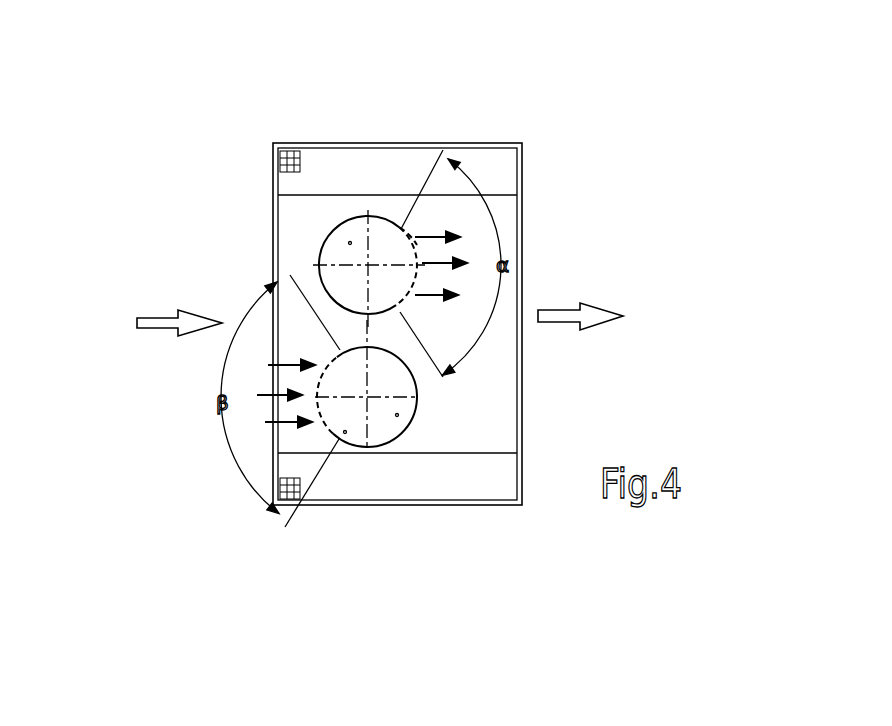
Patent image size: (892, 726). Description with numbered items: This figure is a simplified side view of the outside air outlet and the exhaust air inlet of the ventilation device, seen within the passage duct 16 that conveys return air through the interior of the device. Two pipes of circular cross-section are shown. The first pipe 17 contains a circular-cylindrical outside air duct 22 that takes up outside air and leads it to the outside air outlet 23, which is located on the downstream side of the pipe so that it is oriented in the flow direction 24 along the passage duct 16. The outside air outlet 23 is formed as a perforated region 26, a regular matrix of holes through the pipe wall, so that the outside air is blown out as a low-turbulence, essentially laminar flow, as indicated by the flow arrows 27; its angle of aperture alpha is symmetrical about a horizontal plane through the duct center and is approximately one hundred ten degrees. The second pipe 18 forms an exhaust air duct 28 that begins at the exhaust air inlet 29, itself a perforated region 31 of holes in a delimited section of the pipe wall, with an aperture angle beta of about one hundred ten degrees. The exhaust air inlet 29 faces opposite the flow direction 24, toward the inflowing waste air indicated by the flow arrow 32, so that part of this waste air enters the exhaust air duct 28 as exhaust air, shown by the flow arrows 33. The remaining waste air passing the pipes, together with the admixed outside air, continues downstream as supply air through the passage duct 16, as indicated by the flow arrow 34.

The passage duct 16 is at (504, 409).
The first pipe 17 is at (350, 217).
The second pipe 18 is at (390, 443).
The outside air duct 22 is at (350, 243).
The outside air outlet 23 is at (420, 220).
The flow direction 24 is at (562, 307).
The perforated region 26 is at (402, 230).
The flow arrows 27 is at (443, 262).
The exhaust air duct 28 is at (397, 415).
The exhaust air inlet 29 is at (313, 437).
The perforated region 31 is at (345, 432).
The flow arrow 32 is at (161, 310).
The flow arrows 33 is at (290, 424).
The flow arrow 34 is at (630, 279).